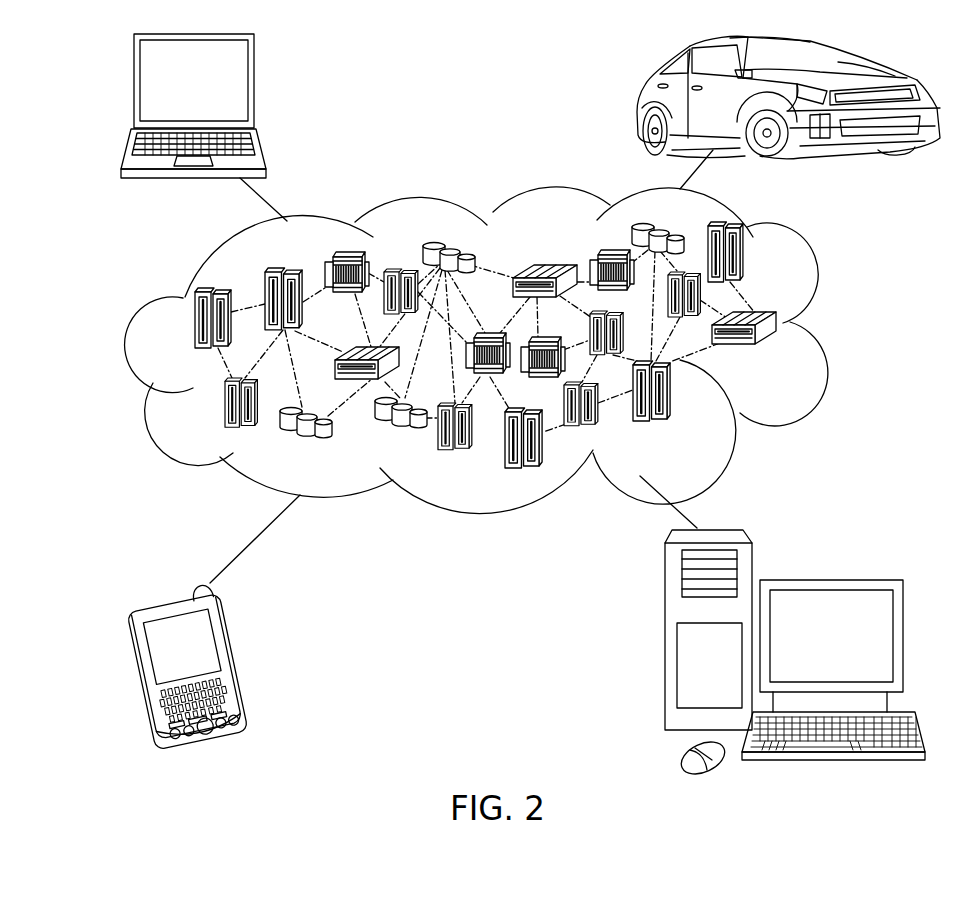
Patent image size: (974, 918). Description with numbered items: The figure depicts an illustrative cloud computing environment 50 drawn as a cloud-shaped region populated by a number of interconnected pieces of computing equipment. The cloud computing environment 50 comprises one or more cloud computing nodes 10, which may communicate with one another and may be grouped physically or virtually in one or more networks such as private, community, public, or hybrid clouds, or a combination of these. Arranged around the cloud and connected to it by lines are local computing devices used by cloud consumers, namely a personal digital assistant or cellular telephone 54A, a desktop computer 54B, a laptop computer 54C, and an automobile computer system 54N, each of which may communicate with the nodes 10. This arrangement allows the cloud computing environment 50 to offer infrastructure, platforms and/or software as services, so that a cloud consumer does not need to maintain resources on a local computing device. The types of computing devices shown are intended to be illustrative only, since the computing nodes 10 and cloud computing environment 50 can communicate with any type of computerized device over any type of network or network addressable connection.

The cloud computing node 10 is at (783, 355).
The cloud computing environment 50 is at (833, 326).
The personal digital assistant or cellular telephone 54A is at (247, 663).
The desktop computer 54B is at (830, 579).
The laptop computer 54C is at (255, 89).
The automobile computer system 54N is at (636, 102).